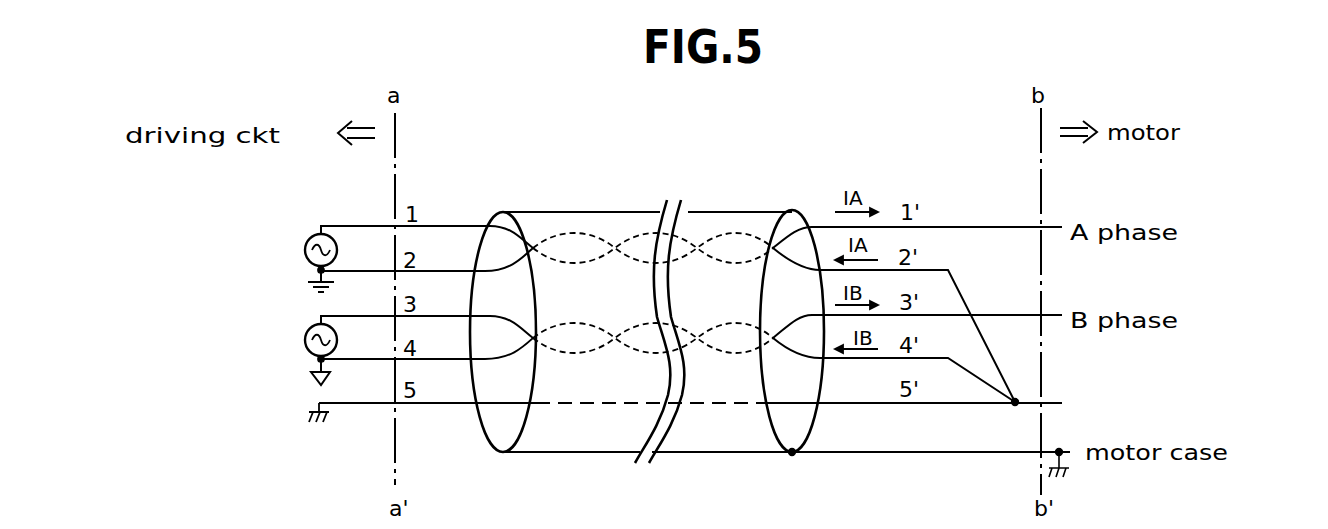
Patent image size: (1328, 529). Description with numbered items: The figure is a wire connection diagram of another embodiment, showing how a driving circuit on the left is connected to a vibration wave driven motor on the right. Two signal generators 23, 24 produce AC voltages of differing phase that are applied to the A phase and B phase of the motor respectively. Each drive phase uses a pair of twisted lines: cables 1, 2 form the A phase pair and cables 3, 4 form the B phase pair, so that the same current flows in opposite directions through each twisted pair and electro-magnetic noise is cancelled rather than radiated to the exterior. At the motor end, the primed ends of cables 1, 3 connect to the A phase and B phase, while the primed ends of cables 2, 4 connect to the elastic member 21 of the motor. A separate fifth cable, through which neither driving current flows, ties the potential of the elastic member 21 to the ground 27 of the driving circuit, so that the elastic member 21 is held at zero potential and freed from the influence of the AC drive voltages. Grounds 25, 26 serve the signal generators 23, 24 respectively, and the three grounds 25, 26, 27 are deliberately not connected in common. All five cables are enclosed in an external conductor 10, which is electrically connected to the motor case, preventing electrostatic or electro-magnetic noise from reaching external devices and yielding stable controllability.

The external conductor 10 is at (735, 210).
The cable 1 is at (691, 237).
The cable 2 is at (667, 325).
The cable 3 is at (691, 326).
The cable 4 is at (667, 370).
The elastic member 21 is at (1070, 404).
The signal generator 23 is at (312, 237).
The signal generator 24 is at (307, 332).
The ground 25 is at (312, 283).
The ground 26 is at (312, 374).
The ground 27 is at (313, 417).